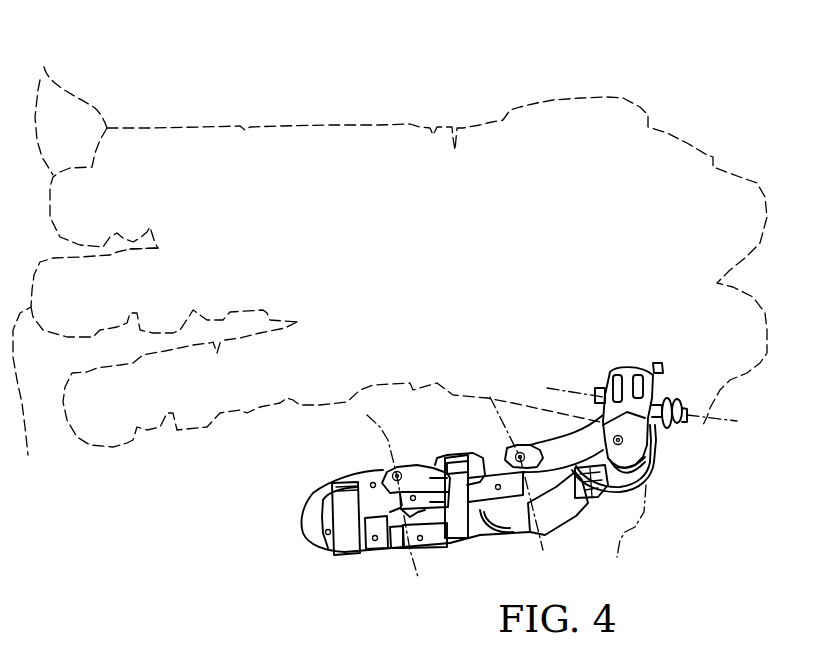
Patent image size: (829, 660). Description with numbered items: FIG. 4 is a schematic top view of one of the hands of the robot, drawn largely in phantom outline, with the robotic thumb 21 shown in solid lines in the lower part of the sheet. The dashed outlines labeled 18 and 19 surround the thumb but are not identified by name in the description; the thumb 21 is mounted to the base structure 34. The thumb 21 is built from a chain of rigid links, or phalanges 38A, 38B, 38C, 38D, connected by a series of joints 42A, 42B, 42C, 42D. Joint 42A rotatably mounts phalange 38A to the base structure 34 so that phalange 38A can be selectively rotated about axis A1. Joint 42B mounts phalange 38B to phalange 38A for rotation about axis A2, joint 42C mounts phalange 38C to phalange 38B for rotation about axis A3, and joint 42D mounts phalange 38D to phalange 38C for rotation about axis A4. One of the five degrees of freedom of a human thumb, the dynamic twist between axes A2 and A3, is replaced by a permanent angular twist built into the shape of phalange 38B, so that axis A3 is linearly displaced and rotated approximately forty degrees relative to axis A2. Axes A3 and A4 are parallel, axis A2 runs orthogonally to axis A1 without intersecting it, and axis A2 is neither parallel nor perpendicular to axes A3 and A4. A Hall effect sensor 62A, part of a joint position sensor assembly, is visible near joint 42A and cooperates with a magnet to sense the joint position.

The forearm 18 is at (487, 123).
The hand 19 is at (40, 80).
The thumb 21 is at (302, 498).
The base structure 34 is at (623, 98).
The phalange 38A is at (647, 437).
The phalange 38B is at (565, 440).
The phalange 38C is at (437, 540).
The phalange 38D is at (335, 545).
The joint 42A is at (603, 393).
The joint 42B is at (650, 477).
The joint 42C is at (513, 451).
The joint 42D is at (390, 470).
The Hall effect sensor 62A is at (667, 371).
The axis A1 is at (553, 390).
The axis A2 is at (626, 536).
The axis A3 is at (490, 397).
The axis A4 is at (367, 415).